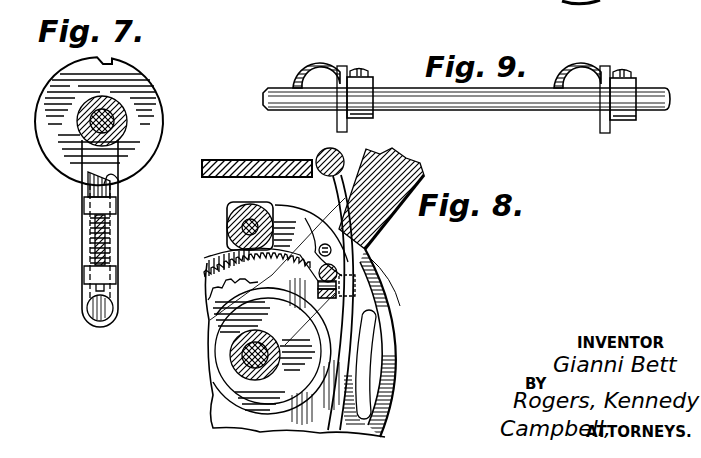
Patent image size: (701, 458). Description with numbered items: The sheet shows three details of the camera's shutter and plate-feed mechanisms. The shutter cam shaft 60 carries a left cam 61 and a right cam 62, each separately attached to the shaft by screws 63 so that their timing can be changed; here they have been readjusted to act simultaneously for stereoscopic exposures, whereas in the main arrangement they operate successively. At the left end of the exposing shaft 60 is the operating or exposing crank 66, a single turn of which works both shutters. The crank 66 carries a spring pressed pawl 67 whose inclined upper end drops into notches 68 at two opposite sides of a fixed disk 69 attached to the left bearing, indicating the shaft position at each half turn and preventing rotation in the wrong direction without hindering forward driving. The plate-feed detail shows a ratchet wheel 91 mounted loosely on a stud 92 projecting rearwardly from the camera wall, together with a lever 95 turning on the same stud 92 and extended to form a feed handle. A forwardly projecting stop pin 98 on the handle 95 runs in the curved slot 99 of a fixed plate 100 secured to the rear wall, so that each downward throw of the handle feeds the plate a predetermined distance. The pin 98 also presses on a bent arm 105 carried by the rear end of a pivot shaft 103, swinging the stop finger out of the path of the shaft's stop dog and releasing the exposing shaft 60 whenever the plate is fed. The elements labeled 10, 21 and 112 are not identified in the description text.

In FIG. 8, the ratchet wheel plate 10 is at (216, 318).
In FIG. 8, the bar 21 is at (253, 160).
In FIG. 9, the cam shaft 60 is at (478, 112).
In FIG. 9, the left cam 61 is at (313, 66).
In FIG. 9, the right cam 62 is at (572, 70).
In FIG. 9, the screws 63 is at (360, 70).
In FIG. 7, the operating or exposing crank 66 is at (84, 240).
In FIG. 7, the spring pressed pawl 67 is at (88, 190).
In FIG. 7, the notches 68 is at (106, 61).
In FIG. 7, the fixed disk 69 is at (158, 117).
In FIG. 8, the ratchet wheel 91 is at (208, 270).
In FIG. 8, the stud 92 is at (252, 355).
In FIG. 8, the lever 95 is at (395, 158).
In FIG. 8, the stop pin 98 is at (305, 218).
In FIG. 8, the curved slot 99 is at (384, 358).
In FIG. 8, the fixed plate 100 is at (403, 380).
In FIG. 8, the pivot shaft 103 is at (320, 155).
In FIG. 8, the bent arm 105 is at (384, 294).
In FIG. 8, the pawl block 112 is at (292, 272).